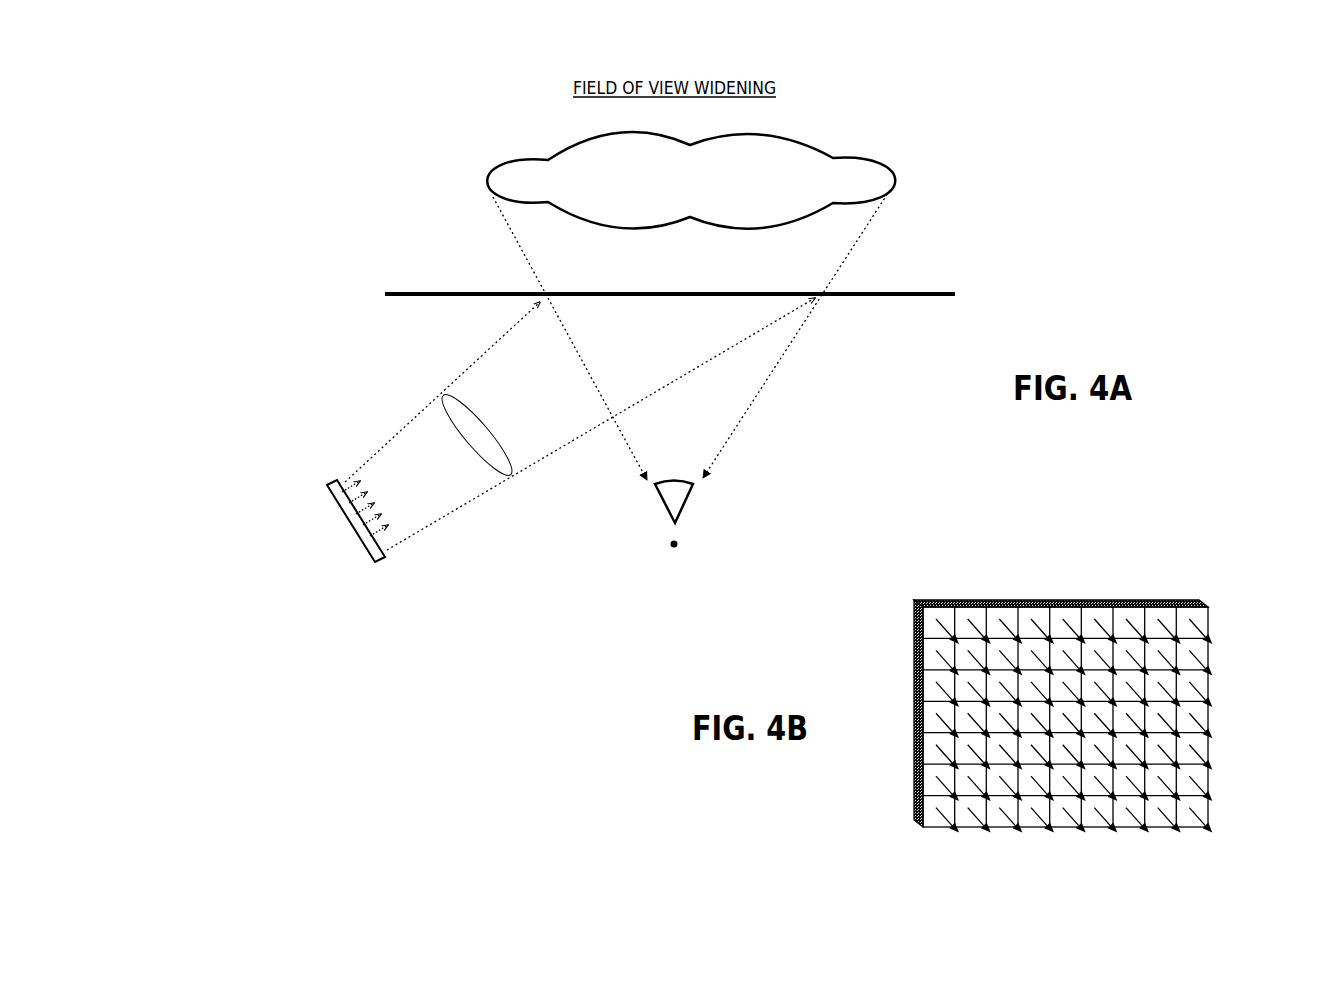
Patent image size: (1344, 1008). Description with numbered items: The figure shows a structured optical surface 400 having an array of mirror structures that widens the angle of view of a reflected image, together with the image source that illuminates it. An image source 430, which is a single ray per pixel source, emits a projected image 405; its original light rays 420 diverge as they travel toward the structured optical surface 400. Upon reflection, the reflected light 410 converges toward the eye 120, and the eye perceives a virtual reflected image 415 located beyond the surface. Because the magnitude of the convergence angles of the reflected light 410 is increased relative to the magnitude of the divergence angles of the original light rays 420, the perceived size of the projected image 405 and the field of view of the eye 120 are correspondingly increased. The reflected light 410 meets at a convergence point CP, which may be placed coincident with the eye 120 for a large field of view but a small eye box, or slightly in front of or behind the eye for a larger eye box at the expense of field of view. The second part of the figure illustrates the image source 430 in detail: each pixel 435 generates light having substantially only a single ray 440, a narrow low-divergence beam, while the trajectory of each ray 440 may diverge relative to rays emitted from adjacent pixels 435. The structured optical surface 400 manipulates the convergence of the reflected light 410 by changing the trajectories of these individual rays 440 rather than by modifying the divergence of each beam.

In FIG. 4A, the eye 120 is at (686, 500).
In FIG. 4A, the structured optical surface 400 is at (933, 294).
In FIG. 4A, the projected image 405 is at (441, 395).
In FIG. 4A, the reflected light 410 is at (626, 443).
In FIG. 4A, the virtual reflected image 415 is at (703, 202).
In FIG. 4A, the original light rays 420 is at (388, 441).
In FIG. 4A, the image source 430 is at (352, 527).
In FIG. 4B, the image source 430 is at (1070, 681).
In FIG. 4B, the pixel 435 is at (928, 633).
In FIG. 4B, the ray 440 is at (957, 642).